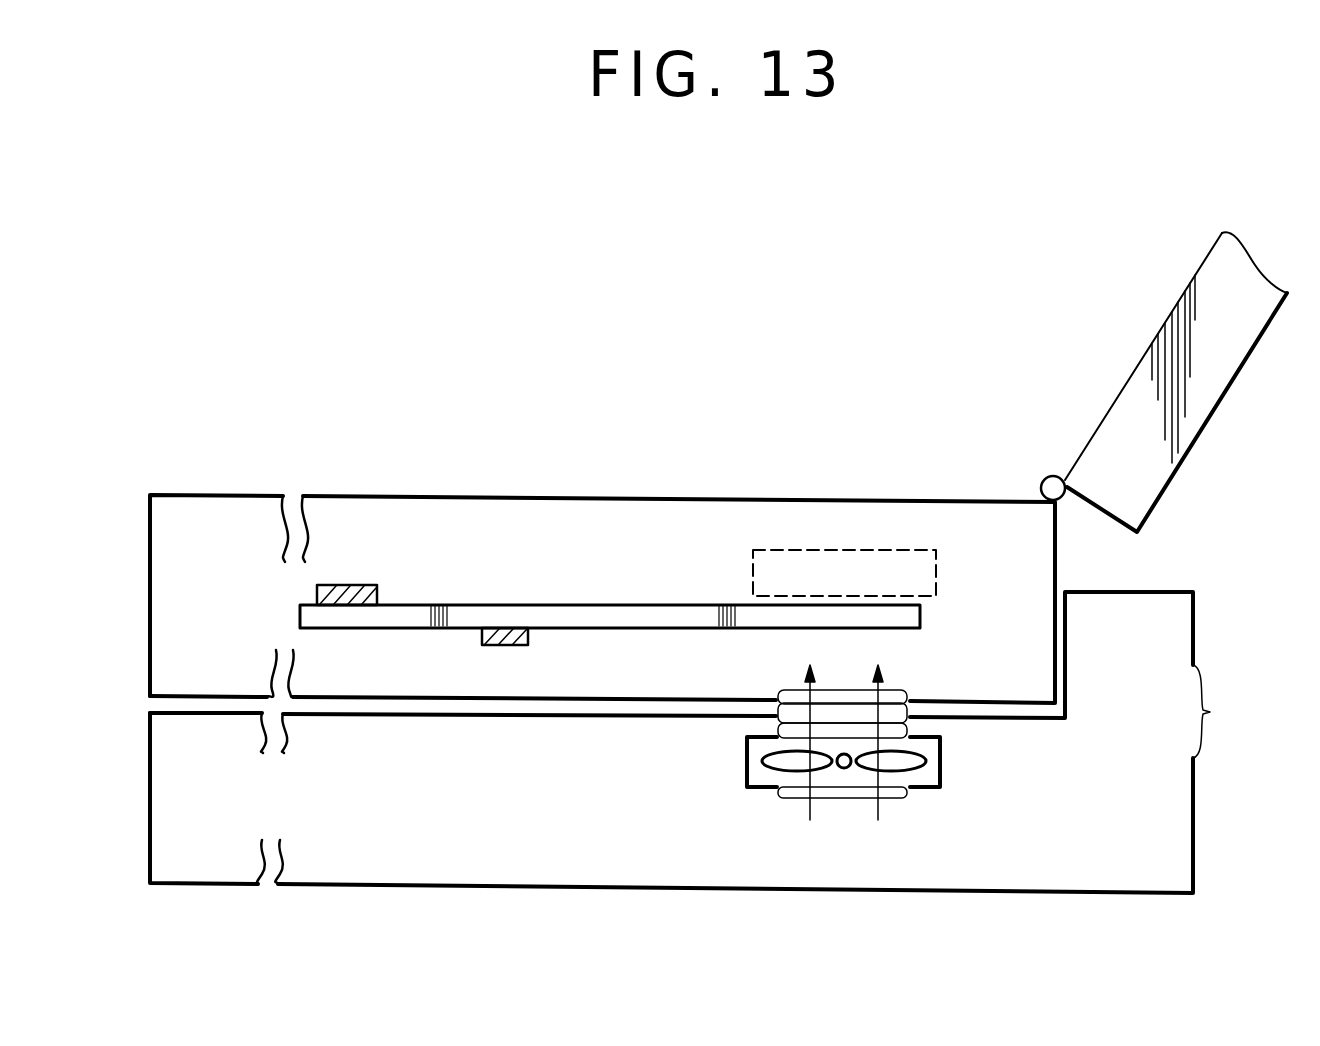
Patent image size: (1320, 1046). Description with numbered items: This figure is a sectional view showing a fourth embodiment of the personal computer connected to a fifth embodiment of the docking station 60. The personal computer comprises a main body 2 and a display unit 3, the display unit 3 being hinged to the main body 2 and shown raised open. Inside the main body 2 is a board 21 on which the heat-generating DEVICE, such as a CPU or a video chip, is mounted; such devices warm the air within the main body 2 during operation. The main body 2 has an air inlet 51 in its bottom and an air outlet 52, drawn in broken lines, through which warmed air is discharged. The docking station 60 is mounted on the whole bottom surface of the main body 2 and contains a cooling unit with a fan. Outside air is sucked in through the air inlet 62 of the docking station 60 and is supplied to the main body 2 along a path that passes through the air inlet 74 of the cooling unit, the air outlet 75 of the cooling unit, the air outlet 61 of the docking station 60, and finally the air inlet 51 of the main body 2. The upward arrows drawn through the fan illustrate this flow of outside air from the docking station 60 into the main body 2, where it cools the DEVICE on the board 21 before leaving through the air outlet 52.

The main body 2 is at (603, 497).
The display unit 3 is at (1130, 385).
The board 21 is at (680, 612).
The air inlet 51 is at (843, 683).
The air outlet 52 is at (846, 548).
The docking station 60 is at (1163, 590).
The air outlet 61 is at (863, 702).
The air inlet 62 is at (1224, 711).
The air inlet 74 is at (843, 800).
The air outlet 75 is at (830, 722).
The device DEVICE is at (488, 627).